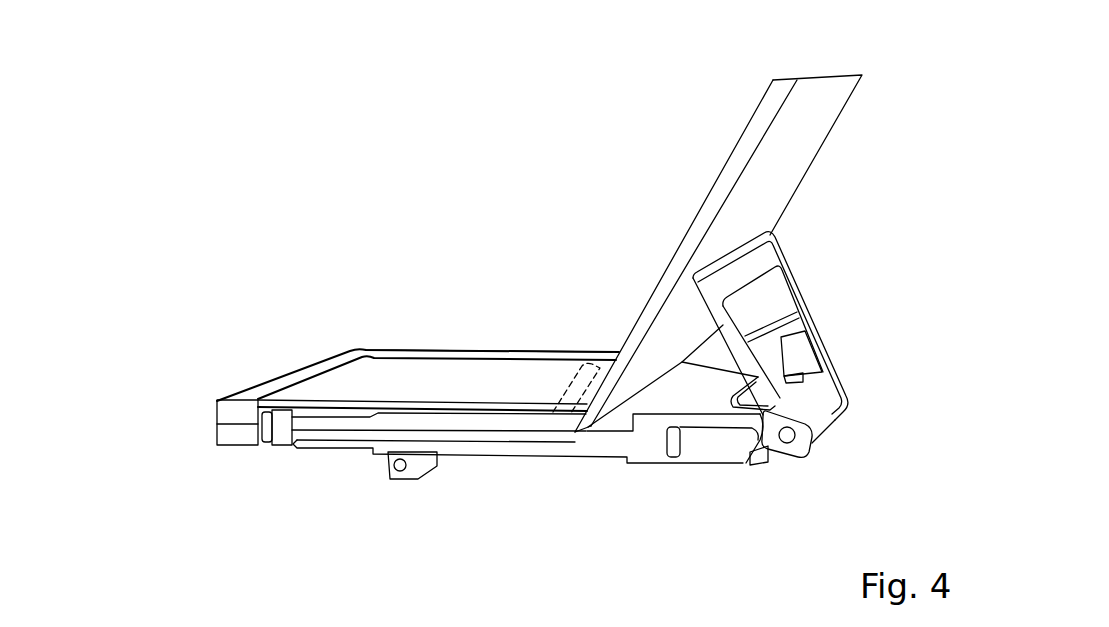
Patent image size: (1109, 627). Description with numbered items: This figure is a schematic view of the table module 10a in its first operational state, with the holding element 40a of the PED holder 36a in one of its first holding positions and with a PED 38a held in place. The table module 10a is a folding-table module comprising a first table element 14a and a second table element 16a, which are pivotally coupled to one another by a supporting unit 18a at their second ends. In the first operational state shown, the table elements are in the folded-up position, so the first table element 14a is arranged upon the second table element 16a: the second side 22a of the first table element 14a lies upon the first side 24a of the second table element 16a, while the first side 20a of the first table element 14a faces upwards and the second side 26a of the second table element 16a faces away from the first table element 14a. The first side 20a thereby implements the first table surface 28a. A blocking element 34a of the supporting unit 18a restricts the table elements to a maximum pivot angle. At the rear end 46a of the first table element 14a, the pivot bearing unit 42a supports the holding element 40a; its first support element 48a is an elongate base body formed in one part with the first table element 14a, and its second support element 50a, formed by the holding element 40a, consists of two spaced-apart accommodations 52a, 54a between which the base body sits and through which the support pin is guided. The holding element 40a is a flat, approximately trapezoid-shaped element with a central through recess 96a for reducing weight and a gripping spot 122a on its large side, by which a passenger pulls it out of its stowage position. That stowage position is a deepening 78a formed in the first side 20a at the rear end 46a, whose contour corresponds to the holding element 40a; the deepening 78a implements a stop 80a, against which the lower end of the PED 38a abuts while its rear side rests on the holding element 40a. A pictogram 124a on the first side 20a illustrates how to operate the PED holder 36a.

The table module 10a is at (498, 301).
The first table element 14a is at (527, 377).
The second table element 16a is at (510, 439).
The supporting unit 18a is at (212, 423).
The first side of the first table element 20a is at (384, 375).
The second side of the first table element 22a is at (357, 438).
The first side of the second table element 24a is at (443, 430).
The second side of the second table element 26a is at (466, 465).
The first table surface 28a is at (299, 381).
The blocking element 34a is at (549, 433).
The PED holder 36a is at (300, 443).
The PED 38a is at (812, 102).
The holding element 40a is at (783, 261).
The pivot bearing unit 42a is at (771, 463).
The rear end of the first table element 46a is at (740, 456).
The first support element 48a is at (836, 421).
The second support element 50a is at (806, 456).
The accommodation 52a is at (846, 401).
The accommodation 54a is at (810, 440).
The deepening 78a is at (670, 402).
The stop 80a is at (588, 444).
The through recess 96a is at (822, 353).
The gripping spot 122a is at (774, 238).
The pictogram 124a is at (577, 367).